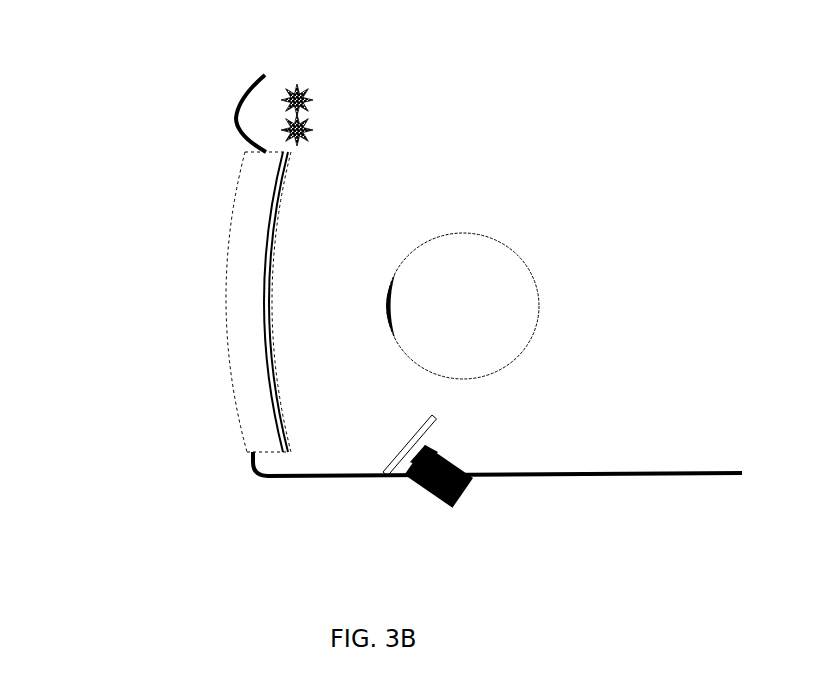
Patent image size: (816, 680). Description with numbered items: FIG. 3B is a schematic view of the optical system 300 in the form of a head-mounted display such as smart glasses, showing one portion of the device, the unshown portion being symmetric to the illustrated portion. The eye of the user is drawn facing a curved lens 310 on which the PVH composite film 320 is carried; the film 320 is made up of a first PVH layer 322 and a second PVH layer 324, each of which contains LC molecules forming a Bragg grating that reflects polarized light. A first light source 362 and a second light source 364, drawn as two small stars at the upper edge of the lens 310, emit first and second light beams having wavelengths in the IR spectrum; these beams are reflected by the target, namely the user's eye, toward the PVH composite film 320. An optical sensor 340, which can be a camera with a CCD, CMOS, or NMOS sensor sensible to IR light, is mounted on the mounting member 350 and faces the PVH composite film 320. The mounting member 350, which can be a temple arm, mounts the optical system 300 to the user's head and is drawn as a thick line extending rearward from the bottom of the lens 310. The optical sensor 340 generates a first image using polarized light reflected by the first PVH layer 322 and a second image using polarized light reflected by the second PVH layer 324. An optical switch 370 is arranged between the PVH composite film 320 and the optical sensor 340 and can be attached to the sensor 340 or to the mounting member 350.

The optical system 300 is at (277, 32).
The lens 310 is at (243, 384).
The PVH composite film 320 is at (157, 302).
The first PVH layer 322 is at (276, 191).
The second PVH layer 324 is at (271, 292).
The optical sensor 340 is at (467, 493).
The mounting member 350 is at (308, 480).
The first light source 362 is at (309, 122).
The second light source 364 is at (309, 92).
The optical switch 370 is at (433, 423).